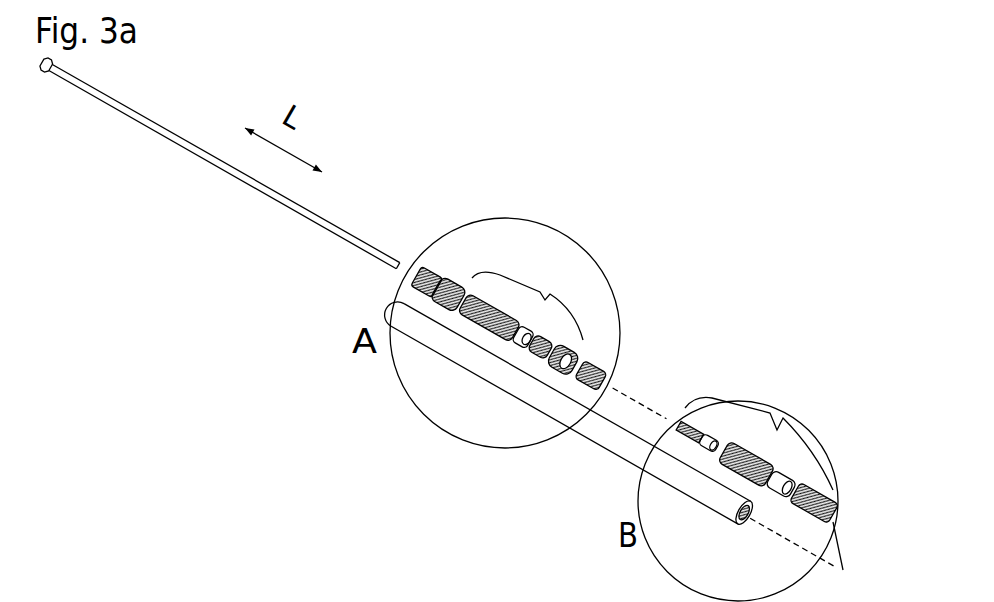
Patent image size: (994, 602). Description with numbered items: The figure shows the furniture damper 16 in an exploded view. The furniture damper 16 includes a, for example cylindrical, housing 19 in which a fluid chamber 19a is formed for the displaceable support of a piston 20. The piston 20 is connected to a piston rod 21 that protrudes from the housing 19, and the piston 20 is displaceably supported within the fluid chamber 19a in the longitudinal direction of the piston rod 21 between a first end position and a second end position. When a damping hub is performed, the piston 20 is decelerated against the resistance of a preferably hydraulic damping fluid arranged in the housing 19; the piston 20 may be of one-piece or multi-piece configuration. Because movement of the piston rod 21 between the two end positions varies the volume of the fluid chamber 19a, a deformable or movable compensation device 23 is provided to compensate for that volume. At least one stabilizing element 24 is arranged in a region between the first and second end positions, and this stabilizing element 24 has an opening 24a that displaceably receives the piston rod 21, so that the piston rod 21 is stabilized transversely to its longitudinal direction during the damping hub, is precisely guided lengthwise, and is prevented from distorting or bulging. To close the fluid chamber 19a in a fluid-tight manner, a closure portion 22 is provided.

The furniture damper 16 is at (299, 318).
The housing 19 is at (610, 425).
The fluid chamber 19a is at (395, 297).
The piston 20 is at (781, 432).
The piston rod 21 is at (189, 136).
The closure portion 22 is at (447, 263).
The compensation device 23 is at (548, 298).
The stabilizing element 24 is at (597, 357).
The opening 24a is at (594, 363).